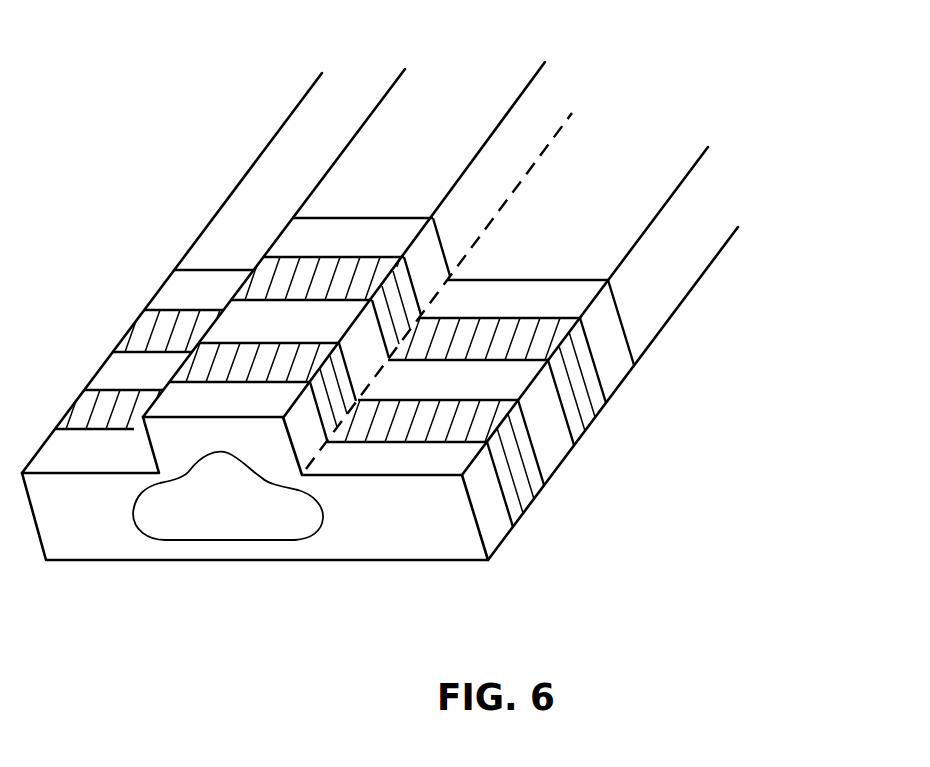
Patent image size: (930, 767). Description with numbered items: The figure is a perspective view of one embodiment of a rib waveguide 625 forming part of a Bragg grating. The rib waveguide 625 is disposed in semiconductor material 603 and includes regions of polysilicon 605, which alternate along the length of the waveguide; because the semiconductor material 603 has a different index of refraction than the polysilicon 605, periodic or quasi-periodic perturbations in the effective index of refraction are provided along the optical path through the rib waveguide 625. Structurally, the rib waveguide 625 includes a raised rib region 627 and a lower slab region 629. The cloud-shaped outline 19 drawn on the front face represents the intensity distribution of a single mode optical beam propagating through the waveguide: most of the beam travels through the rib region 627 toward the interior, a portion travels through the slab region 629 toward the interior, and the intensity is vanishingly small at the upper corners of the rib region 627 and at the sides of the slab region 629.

The rib waveguide 625 is at (742, 22).
The rib region 627 is at (278, 447).
The slab region 629 is at (424, 548).
The semiconductor material 603 is at (537, 562).
The polysilicon 605 is at (570, 520).
The region 19 is at (262, 542).